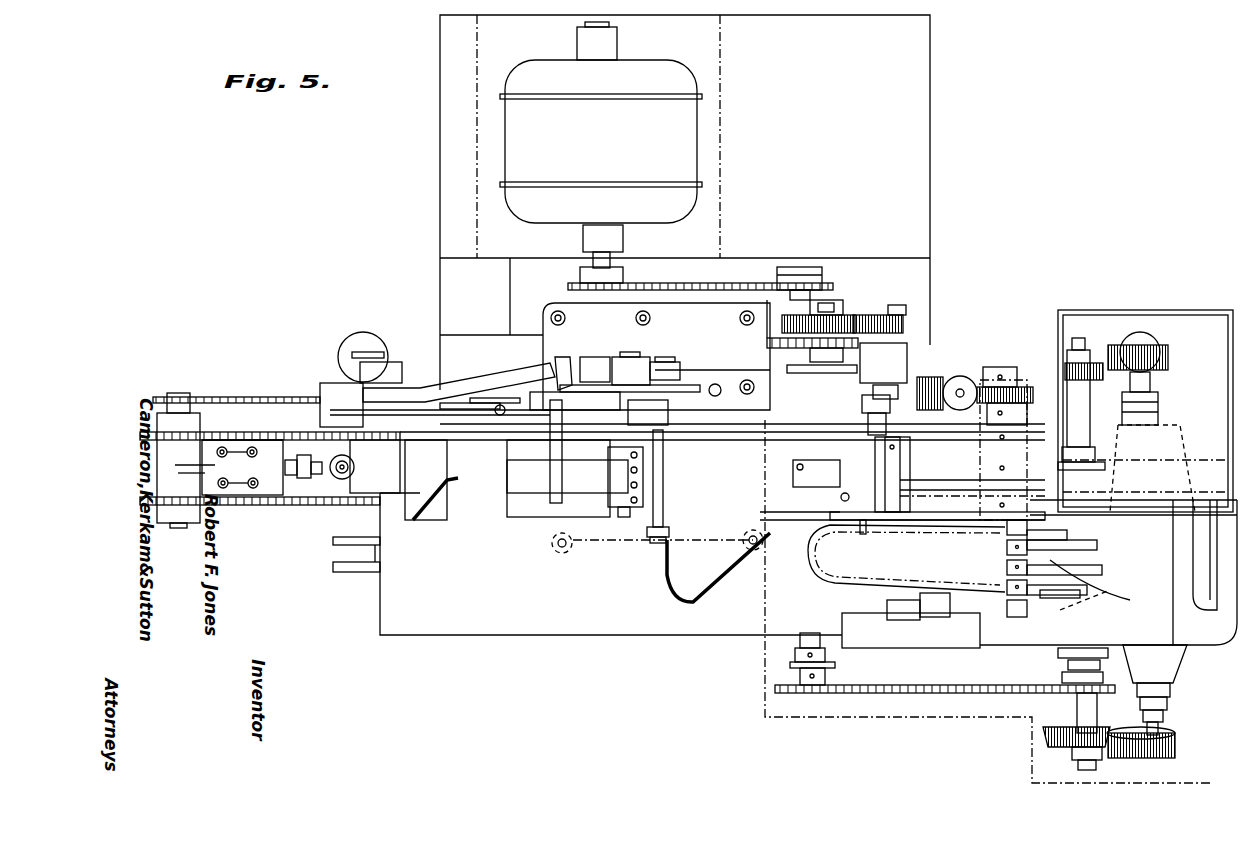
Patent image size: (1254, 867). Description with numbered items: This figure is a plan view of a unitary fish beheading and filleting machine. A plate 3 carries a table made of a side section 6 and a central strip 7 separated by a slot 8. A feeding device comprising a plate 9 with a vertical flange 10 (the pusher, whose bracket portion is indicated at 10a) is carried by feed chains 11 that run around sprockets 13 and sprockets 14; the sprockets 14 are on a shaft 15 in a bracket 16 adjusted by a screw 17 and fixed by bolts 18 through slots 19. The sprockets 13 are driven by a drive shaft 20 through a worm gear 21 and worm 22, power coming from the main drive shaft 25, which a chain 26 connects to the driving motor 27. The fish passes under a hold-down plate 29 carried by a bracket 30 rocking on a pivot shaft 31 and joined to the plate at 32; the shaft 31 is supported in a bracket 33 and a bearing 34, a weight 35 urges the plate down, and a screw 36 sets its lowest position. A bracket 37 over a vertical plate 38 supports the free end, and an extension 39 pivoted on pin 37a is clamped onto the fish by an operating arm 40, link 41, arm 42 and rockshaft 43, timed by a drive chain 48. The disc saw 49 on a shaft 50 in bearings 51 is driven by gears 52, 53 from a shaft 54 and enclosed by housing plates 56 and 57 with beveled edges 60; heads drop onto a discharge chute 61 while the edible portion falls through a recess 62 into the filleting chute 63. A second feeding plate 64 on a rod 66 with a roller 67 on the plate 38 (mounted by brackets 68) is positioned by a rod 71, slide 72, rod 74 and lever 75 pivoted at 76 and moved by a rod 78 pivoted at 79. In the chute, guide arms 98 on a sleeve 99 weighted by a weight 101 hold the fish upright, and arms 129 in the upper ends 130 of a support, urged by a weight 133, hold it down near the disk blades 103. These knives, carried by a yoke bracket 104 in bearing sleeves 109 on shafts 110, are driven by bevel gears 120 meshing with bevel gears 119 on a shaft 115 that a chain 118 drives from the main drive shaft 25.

The plate 3 is at (300, 480).
The side section 6 is at (512, 622).
The central section or strip 7 is at (345, 481).
The slot 8 is at (395, 495).
The plate 9 is at (1000, 367).
The vertical flange 10 is at (447, 490).
The bracket 10a is at (445, 512).
The feed chains 11 is at (232, 432).
The sprockets 13 is at (1020, 478).
The sprockets 14 is at (145, 434).
The shaft 15 is at (180, 397).
The bracket 16 is at (180, 470).
The screw 17 is at (270, 500).
The bolts 18 is at (250, 490).
The slots 19 is at (238, 488).
The drive shaft 20 is at (1003, 367).
The worm gear 21 is at (1020, 387).
The worm 22 is at (948, 383).
The main drive shaft 25 is at (800, 267).
The chain 26 is at (722, 283).
The driving motor 27 is at (672, 125).
The hold-down plate 29 is at (660, 540).
The bracket 30 is at (905, 470).
The pivot pin or shaft 31 is at (862, 403).
The pivotal connection 32 is at (868, 430).
The bracket 33 is at (887, 390).
The bearing 34 is at (866, 532).
The weight 35 is at (795, 476).
The screw 36 is at (841, 497).
The bracket 37 is at (645, 456).
The pivot pin 37a is at (620, 515).
The vertical plate 38 is at (727, 433).
The extension 39 is at (530, 502).
The operating arm 40 is at (550, 448).
The link 41 is at (562, 372).
The arm 42 is at (490, 400).
The rockshaft 43 is at (478, 403).
The drive chain 48 is at (280, 397).
The disc saw 49 is at (806, 522).
The shaft 50 is at (880, 315).
The bearings 51 is at (905, 345).
The gear 52 is at (898, 318).
The gear 53 is at (840, 315).
The shaft 54 is at (838, 300).
The plate 56 is at (915, 518).
The plate 57 is at (975, 550).
The beveled edges 60 is at (845, 535).
The inclined discharge chute 61 is at (1178, 320).
The notch or recess 62 is at (850, 579).
The inclined chute 63 is at (887, 606).
The plate 64 is at (722, 565).
The rod 66 is at (660, 492).
The roller 67 is at (660, 402).
The brackets 68 is at (722, 385).
The rod 71 is at (587, 418).
The slide 72 is at (320, 413).
The rod 74 is at (423, 387).
The lever 75 is at (605, 357).
The pivot 76 is at (672, 368).
The rod 78 is at (468, 377).
The pivot 79 is at (640, 372).
The guide arms 98 is at (1020, 617).
The sleeve 99 is at (1007, 557).
The weight 101 is at (1155, 570).
The disk blades 103 is at (1222, 585).
The yoke-shaped bracket 104 is at (1210, 632).
The bearing sleeves 109 is at (1175, 665).
The shaft 110 is at (1160, 727).
The shaft 115 is at (1077, 710).
The chain 118 is at (966, 693).
The bevel gears 119 is at (1043, 737).
The bevel gears 120 is at (1175, 746).
The arms 129 is at (1105, 612).
The upper ends 130 is at (1080, 598).
The weight 133 is at (932, 617).